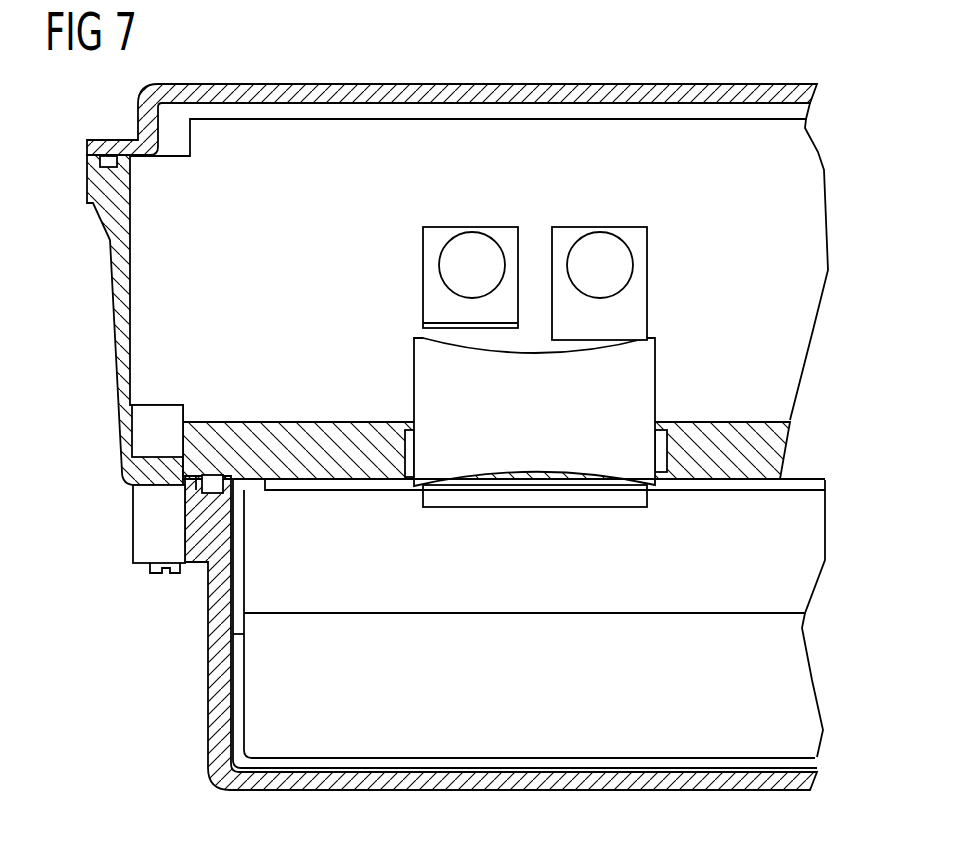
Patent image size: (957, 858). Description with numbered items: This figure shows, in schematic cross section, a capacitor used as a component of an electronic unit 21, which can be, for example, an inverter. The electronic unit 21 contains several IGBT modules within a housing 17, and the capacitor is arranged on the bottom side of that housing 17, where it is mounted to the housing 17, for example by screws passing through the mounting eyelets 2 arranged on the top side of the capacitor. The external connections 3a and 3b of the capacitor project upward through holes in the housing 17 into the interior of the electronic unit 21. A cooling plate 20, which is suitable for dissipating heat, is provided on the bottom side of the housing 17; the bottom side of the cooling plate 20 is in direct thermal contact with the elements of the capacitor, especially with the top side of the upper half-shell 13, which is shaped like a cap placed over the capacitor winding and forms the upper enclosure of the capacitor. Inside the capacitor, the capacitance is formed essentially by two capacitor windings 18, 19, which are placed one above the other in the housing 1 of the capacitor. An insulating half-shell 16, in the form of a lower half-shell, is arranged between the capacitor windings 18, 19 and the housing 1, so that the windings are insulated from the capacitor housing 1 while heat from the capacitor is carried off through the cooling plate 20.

The housing 1 is at (600, 792).
The mounting eyelets 2 is at (147, 527).
The external connection 3a is at (430, 238).
The external connection 3b is at (647, 238).
The upper half-shell 13 is at (245, 550).
The insulating half-shell 16 is at (510, 762).
The housing 17 is at (95, 210).
The capacitor winding 18 is at (820, 542).
The capacitor winding 19 is at (793, 657).
The cooling plate 20 is at (742, 428).
The electronic unit 21 is at (806, 166).